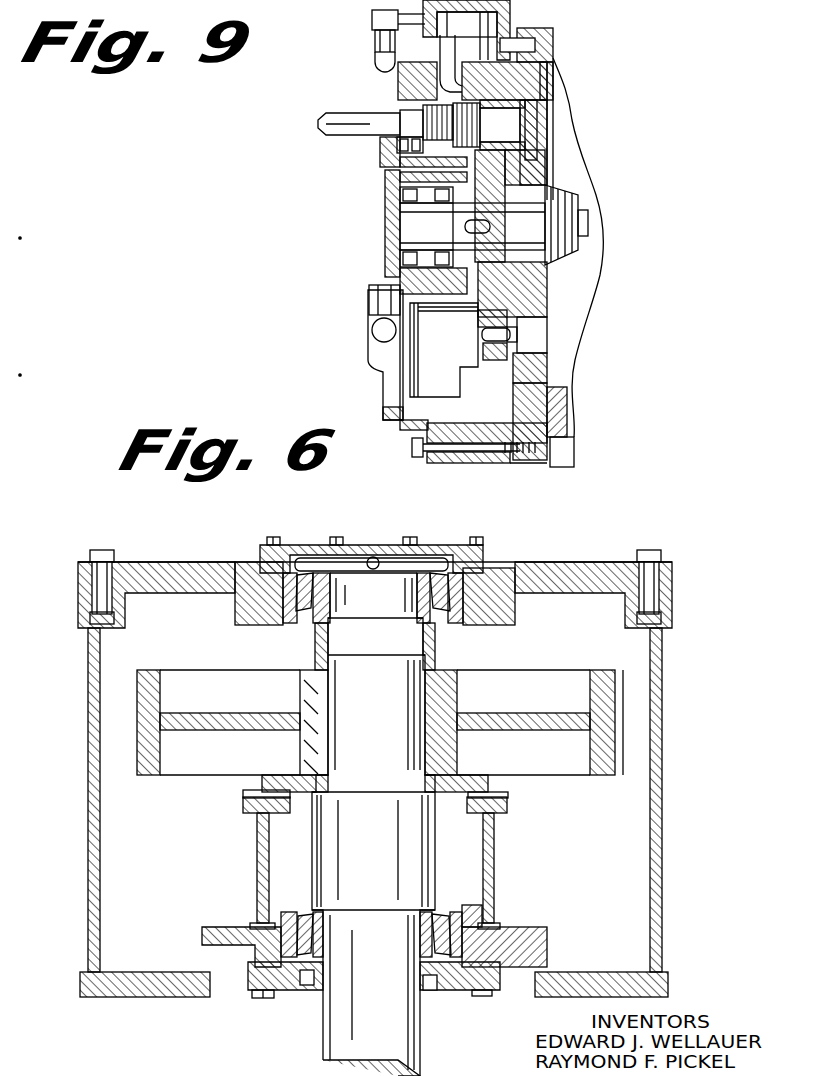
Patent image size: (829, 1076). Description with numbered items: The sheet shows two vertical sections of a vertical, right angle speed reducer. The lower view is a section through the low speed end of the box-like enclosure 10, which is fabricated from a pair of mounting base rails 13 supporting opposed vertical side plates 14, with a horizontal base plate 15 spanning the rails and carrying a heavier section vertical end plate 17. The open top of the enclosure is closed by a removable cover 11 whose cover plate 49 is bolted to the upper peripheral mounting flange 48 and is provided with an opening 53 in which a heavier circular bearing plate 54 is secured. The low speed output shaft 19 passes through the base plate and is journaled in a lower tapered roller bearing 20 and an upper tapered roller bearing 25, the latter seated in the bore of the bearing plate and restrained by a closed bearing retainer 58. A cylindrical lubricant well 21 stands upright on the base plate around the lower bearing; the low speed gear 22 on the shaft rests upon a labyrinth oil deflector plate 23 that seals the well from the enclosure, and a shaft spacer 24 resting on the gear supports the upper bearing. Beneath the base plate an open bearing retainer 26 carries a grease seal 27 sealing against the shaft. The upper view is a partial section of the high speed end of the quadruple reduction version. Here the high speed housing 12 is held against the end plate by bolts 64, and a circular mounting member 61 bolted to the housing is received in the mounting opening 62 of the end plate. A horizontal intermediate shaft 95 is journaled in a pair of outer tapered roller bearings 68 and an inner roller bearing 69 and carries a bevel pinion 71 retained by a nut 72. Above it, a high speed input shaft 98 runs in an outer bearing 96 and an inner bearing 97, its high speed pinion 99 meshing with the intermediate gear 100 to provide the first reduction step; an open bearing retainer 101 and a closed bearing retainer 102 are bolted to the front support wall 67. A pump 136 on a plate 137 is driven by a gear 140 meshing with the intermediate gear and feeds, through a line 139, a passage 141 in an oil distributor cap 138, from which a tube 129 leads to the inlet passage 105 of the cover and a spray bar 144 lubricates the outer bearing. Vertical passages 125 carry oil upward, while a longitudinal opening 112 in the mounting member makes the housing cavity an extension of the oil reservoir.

In FIG. 6, the box-like enclosure 10 is at (372, 800).
In FIG. 6, the removable cover 11 is at (625, 558).
In FIG. 9, the high speed housing 12 is at (492, 458).
In FIG. 9, the mounting base rails 13 is at (565, 453).
In FIG. 6, the mounting base rails 13 is at (140, 998).
In FIG. 9, the vertical side plates 14 is at (600, 270).
In FIG. 6, the vertical side plates 14 is at (662, 670).
In FIG. 9, the horizontal base plate 15 is at (567, 418).
In FIG. 6, the horizontal base plate 15 is at (547, 940).
In FIG. 9, the heavier section vertical end plate 17 is at (548, 382).
In FIG. 6, the low speed output shaft 19 is at (326, 856).
In FIG. 6, the lower tapered roller bearing 20 is at (300, 912).
In FIG. 6, the cylindrical lubricant well 21 is at (494, 853).
In FIG. 6, the low speed gear 22 is at (597, 772).
In FIG. 6, the labyrinth oil deflector plate 23 is at (262, 785).
In FIG. 6, the shaft spacer 24 is at (437, 655).
In FIG. 6, the upper tapered roller bearing 25 is at (298, 620).
In FIG. 6, the open bearing retainer 26 is at (288, 992).
In FIG. 6, the grease seal 27 is at (320, 995).
In FIG. 6, the upper peripheral mounting flange 48 is at (82, 612).
In FIG. 9, the cover plate 49 is at (553, 37).
In FIG. 6, the cover plate 49 is at (582, 556).
In FIG. 6, the cover plate opening 53 is at (503, 570).
In FIG. 6, the circular bearing plate 54 is at (494, 622).
In FIG. 6, the closed bearing retainer 58 is at (375, 545).
In FIG. 9, the mounting member 61 is at (547, 92).
In FIG. 9, the mounting opening 62 is at (548, 370).
In FIG. 9, the bolts 64 is at (468, 458).
In FIG. 9, the front support wall 67 is at (398, 172).
In FIG. 9, the outer tapered roller bearings 68 is at (400, 198).
In FIG. 9, the inner roller bearing 69 is at (560, 172).
In FIG. 9, the bevel pinion 71 is at (590, 246).
In FIG. 9, the nut 72 is at (585, 222).
In FIG. 9, the horizontal intermediate shaft 95 is at (523, 231).
In FIG. 9, the outer tapered roller bearing 96 is at (385, 147).
In FIG. 9, the inner tapered roller bearing 97 is at (532, 137).
In FIG. 9, the high speed input shaft 98 is at (363, 112).
In FIG. 9, the high speed pinion 99 is at (472, 130).
In FIG. 9, the intermediate gear 100 is at (485, 286).
In FIG. 9, the open bearing retainer 101 is at (382, 158).
In FIG. 9, the closed bearing retainer 102 is at (386, 235).
In FIG. 9, the inlet passage 105 is at (553, 45).
In FIG. 9, the longitudinal opening 112 is at (533, 323).
In FIG. 9, the vertical passages 125 is at (380, 70).
In FIG. 9, the tube 129 is at (545, 70).
In FIG. 9, the pump 136 is at (456, 351).
In FIG. 9, the plate 137 is at (392, 380).
In FIG. 9, the oil distributor cap 138 is at (510, 8).
In FIG. 9, the line 139 is at (376, 286).
In FIG. 9, the gear 140 is at (494, 360).
In FIG. 9, the passage 141 is at (465, 20).
In FIG. 9, the spray bar 144 is at (460, 70).